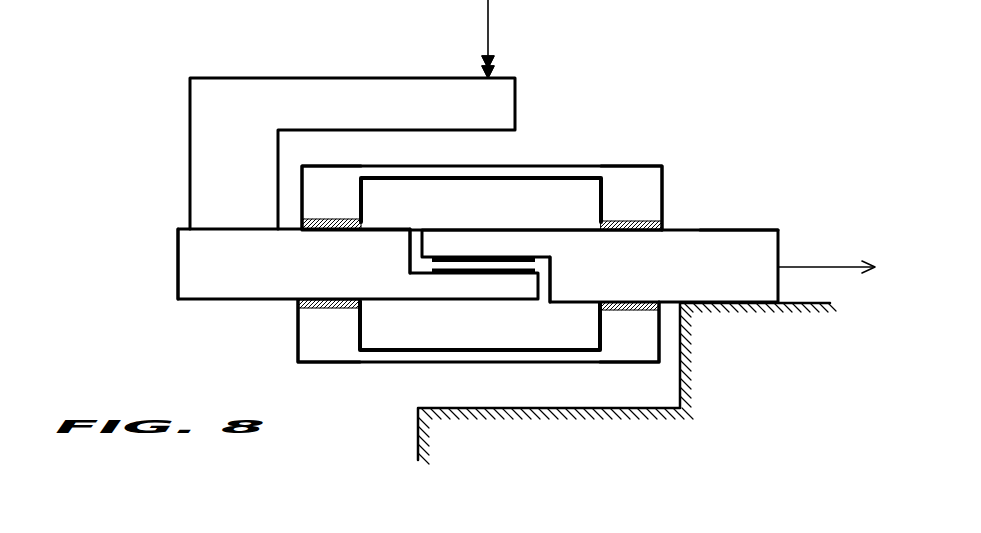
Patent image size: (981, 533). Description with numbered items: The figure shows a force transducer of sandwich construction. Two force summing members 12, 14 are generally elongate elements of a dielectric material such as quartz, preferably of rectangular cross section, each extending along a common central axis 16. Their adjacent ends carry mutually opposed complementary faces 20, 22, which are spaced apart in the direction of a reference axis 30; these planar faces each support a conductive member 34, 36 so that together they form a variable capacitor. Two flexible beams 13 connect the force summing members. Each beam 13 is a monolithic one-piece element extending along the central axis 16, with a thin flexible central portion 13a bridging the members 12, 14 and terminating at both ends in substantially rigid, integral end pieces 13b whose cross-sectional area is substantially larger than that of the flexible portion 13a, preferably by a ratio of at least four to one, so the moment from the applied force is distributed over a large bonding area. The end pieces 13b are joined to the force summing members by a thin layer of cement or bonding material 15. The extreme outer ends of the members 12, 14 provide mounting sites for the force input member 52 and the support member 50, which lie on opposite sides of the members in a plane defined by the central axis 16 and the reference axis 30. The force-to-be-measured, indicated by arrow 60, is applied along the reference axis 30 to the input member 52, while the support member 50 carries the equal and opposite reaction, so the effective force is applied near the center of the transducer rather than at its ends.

The force summing member 12 is at (299, 279).
The flexible beam 13 is at (528, 156).
The thin flexible central portion 13a is at (443, 176).
The rigid integral end piece 13b is at (336, 182).
The force summing member 14 is at (686, 279).
The bonding material 15 is at (364, 222).
The common central axis 16 is at (817, 266).
The complementary face 20 is at (410, 270).
The complementary face 22 is at (546, 259).
The reference axis 30 is at (488, 10).
The conductive member 34 is at (490, 273).
The conductive member 36 is at (479, 258).
The support member 50 is at (585, 408).
The force input member 52 is at (356, 90).
The force-to-be-measured arrow 60 is at (491, 63).